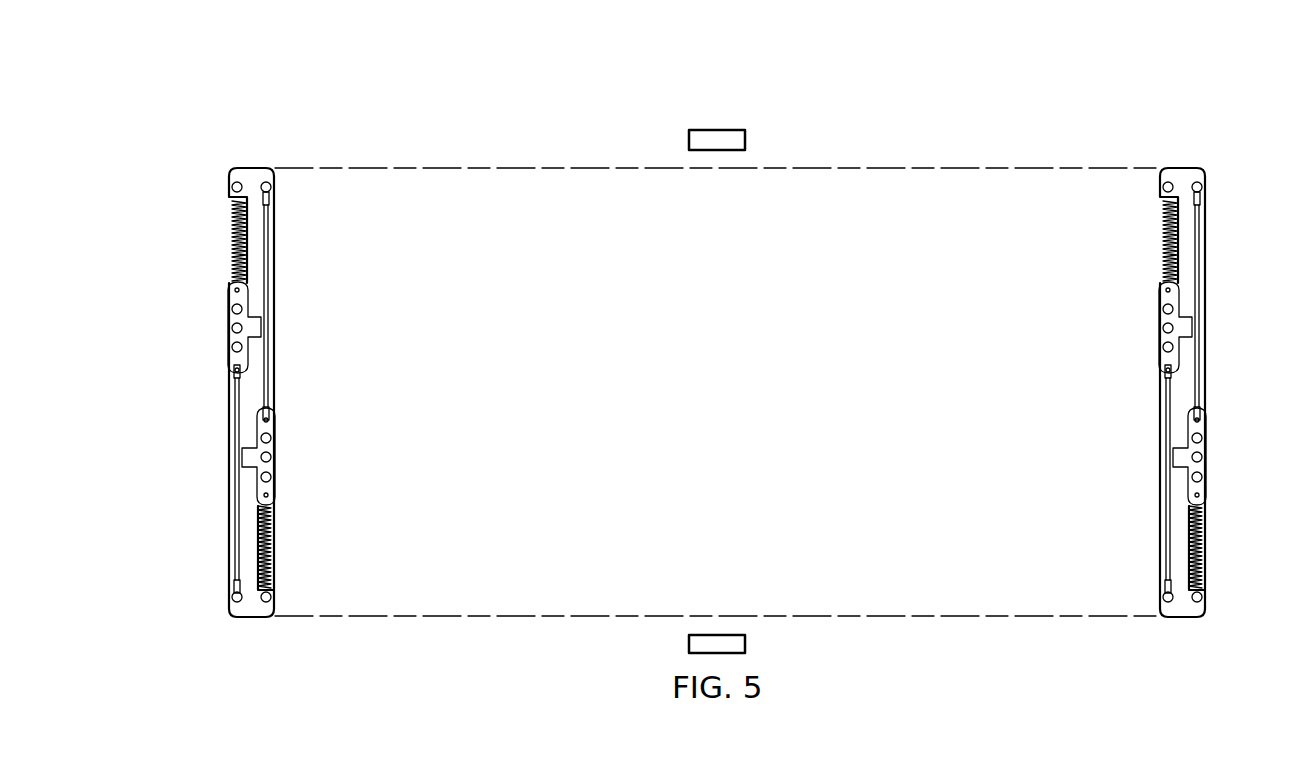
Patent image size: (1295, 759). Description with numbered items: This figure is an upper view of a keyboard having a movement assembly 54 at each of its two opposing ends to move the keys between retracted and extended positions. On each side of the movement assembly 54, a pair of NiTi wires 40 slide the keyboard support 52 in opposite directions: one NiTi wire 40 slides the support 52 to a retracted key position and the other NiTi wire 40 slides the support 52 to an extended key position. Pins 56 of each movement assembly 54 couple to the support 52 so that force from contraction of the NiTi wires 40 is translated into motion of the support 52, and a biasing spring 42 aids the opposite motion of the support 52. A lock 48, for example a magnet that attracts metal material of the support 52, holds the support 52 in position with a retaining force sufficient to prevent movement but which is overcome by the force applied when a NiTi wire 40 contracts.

The NiTi wire 40 is at (268, 266).
The biasing spring 42 is at (232, 232).
The lock 48 is at (746, 140).
The support 52 is at (250, 610).
The movement assembly 54 is at (716, 360).
The pins 56 is at (314, 482).